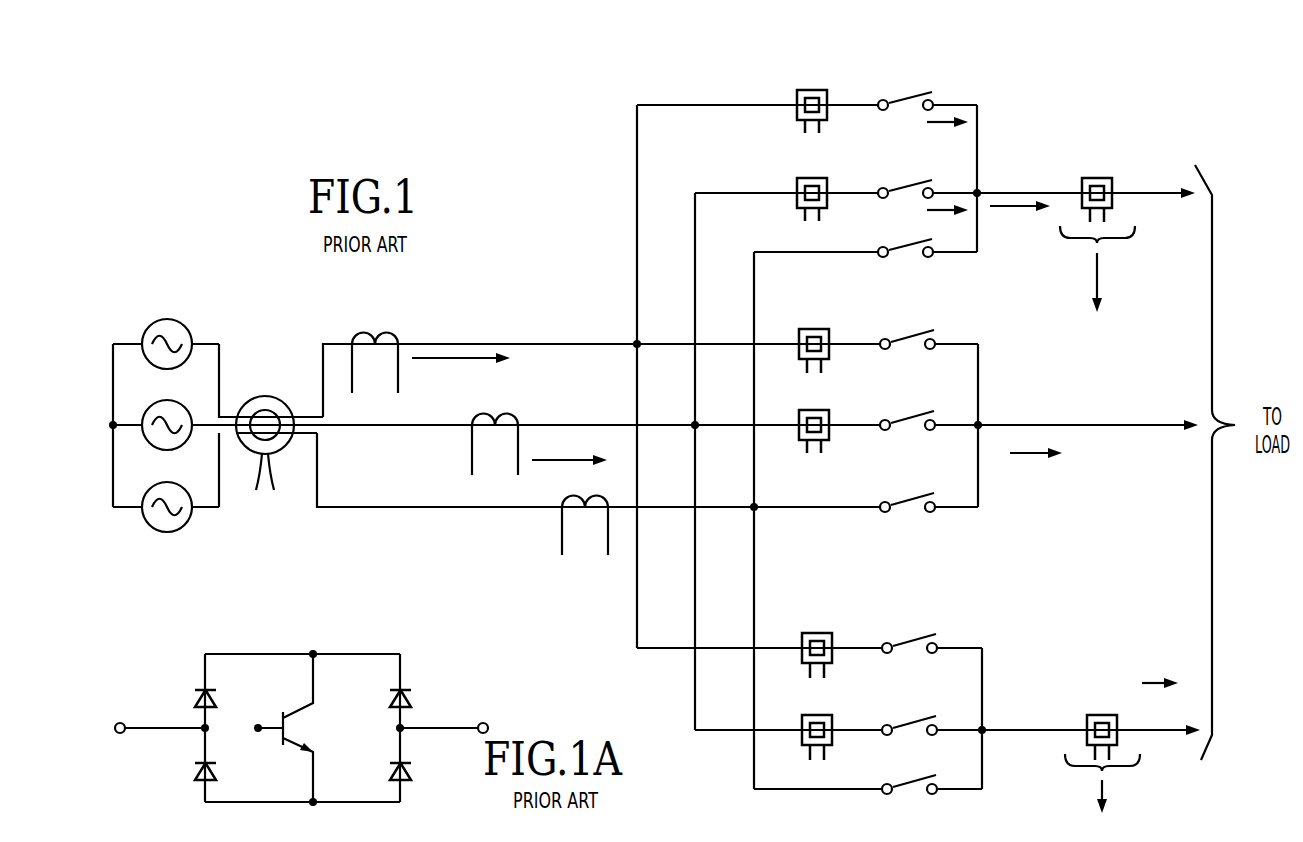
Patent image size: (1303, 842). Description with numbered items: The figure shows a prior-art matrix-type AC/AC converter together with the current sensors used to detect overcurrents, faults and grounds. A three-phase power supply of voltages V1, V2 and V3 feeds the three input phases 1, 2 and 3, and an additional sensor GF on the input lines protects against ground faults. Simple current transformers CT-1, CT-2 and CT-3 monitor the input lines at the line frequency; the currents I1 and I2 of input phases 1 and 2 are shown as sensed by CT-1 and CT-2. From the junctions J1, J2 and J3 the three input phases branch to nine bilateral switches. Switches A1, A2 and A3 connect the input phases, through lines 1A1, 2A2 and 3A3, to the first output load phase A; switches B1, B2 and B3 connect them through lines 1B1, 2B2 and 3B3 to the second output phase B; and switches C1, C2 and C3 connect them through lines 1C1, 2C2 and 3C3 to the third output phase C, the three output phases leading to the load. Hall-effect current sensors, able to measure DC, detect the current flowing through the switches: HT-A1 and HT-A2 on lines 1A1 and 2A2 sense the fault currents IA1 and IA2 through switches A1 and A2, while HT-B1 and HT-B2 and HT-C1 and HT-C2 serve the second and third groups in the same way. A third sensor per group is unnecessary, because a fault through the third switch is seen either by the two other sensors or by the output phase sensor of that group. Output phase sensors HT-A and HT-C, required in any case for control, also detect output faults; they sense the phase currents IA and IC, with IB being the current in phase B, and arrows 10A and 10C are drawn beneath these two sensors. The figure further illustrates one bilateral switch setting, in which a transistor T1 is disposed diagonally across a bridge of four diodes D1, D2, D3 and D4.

In FIG. 1, the power supply voltage V1 is at (175, 331).
In FIG. 1, the power supply voltage V2 is at (175, 412).
In FIG. 1, the power supply voltage V3 is at (175, 495).
In FIG. 1, the ground fault sensor GF is at (265, 424).
In FIG. 1, the current transformer CT-1 is at (375, 350).
In FIG. 1, the current transformer CT-2 is at (495, 430).
In FIG. 1, the current transformer CT-3 is at (585, 511).
In FIG. 1, the input phase 1 is at (460, 342).
In FIG. 1, the input phase 2 is at (570, 423).
In FIG. 1, the input phase 3 is at (330, 507).
In FIG. 1, the input phase current I1 is at (476, 358).
In FIG. 1, the input phase current I2 is at (581, 460).
In FIG. 1, the junction 1 J1 is at (637, 344).
In FIG. 1, the junction 2 J2 is at (695, 425).
In FIG. 1, the junction 3 J3 is at (756, 505).
In FIG. 1, the line 1A1 is at (757, 105).
In FIG. 1, the line 2A2 is at (773, 193).
In FIG. 1, the branch conductor 3A3 is at (800, 252).
In FIG. 1, the current sensor HT-A1 is at (812, 97).
In FIG. 1, the current sensor HT-A2 is at (811, 189).
In FIG. 1, the bilateral switch A1 is at (913, 94).
In FIG. 1, the bilateral switch A2 is at (913, 183).
In FIG. 1, the bilateral switch A3 is at (912, 242).
In FIG. 1, the fault current IA1 is at (947, 138).
In FIG. 1, the fault current IA2 is at (947, 224).
In FIG. 1, the output phase current IA is at (1020, 224).
In FIG. 1, the output phase current sensor HT-A is at (1096, 181).
In FIG. 1, the output load phase A is at (1123, 193).
In FIG. 1, the output signal of transducer HT-A 10A is at (1105, 269).
In FIG. 1, the branch conductor 1B1 is at (733, 343).
In FIG. 1, the branch conductor 2B2 is at (733, 430).
In FIG. 1, the branch conductor 3B3 is at (793, 508).
In FIG. 1, the current sensor HT-B1 is at (815, 334).
In FIG. 1, the current sensor HT-B2 is at (815, 418).
In FIG. 1, the bilateral switch B1 is at (918, 333).
In FIG. 1, the bilateral switch B2 is at (918, 413).
In FIG. 1, the bilateral switch B3 is at (918, 497).
In FIG. 1, the output phase current IB is at (1036, 466).
In FIG. 1, the output load phase B is at (1098, 425).
In FIG. 1, the branch conductor 1C1 is at (742, 648).
In FIG. 1, the branch conductor 2C2 is at (745, 730).
In FIG. 1, the branch conductor 3C3 is at (753, 758).
In FIG. 1, the current sensor HT-C1 is at (817, 637).
In FIG. 1, the current sensor HT-C2 is at (816, 723).
In FIG. 1, the bilateral switch C1 is at (918, 640).
In FIG. 1, the bilateral switch C2 is at (918, 722).
In FIG. 1, the bilateral switch C3 is at (918, 784).
In FIG. 1, the output phase current IC is at (1160, 669).
In FIG. 1, the output phase current sensor HT-C is at (1101, 722).
In FIG. 1, the output load phase C is at (1140, 730).
In FIG. 1, the output signal of transducer HT-C 10C is at (1105, 785).
In FIG. 1A, the diode D1 is at (197, 705).
In FIG. 1A, the diode D2 is at (197, 783).
In FIG. 1A, the diode D3 is at (410, 700).
In FIG. 1A, the diode D4 is at (408, 780).
In FIG. 1A, the transistor T1 is at (335, 740).